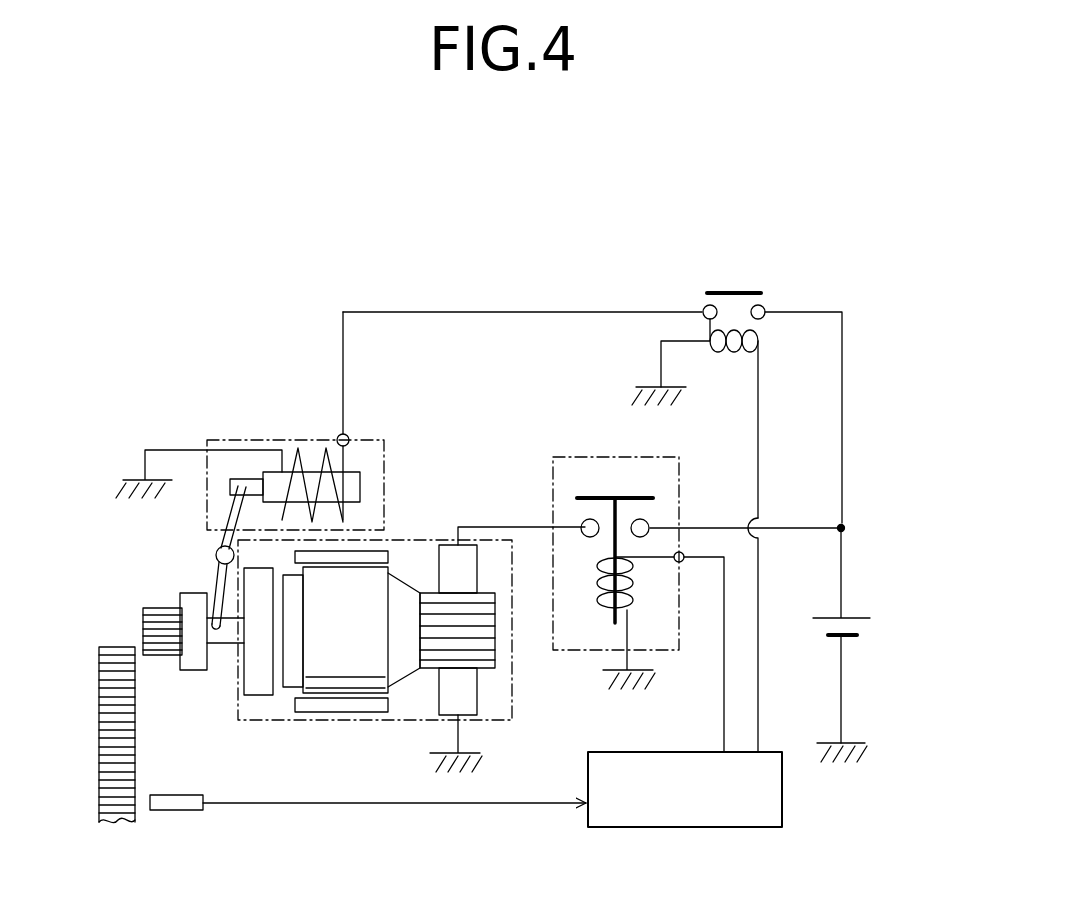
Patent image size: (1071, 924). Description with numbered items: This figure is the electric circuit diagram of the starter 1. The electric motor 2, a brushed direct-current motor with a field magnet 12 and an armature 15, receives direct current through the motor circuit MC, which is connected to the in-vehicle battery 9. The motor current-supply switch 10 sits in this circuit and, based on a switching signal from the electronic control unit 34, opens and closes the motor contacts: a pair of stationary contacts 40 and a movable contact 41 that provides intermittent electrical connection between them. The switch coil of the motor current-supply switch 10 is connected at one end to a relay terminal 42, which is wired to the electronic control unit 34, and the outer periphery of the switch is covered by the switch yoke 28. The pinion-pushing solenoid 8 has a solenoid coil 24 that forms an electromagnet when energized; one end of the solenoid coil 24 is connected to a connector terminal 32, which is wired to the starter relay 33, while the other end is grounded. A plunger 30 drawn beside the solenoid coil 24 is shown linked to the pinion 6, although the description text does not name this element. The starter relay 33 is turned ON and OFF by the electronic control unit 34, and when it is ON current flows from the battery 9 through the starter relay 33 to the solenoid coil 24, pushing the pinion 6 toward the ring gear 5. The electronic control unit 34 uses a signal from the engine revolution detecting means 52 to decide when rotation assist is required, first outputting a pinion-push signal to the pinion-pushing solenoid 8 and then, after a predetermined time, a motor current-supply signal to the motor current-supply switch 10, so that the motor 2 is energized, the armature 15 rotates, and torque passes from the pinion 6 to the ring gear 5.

The starter 1 is at (555, 268).
The electric motor 2 is at (258, 724).
The ring gear 5 is at (112, 728).
The pinion 6 is at (157, 618).
The pinion-pushing solenoid 8 is at (222, 438).
The in-vehicle battery 9 is at (860, 628).
The motor current-supply switch 10 is at (575, 455).
The field magnet 12 is at (317, 716).
The armature 15 is at (370, 683).
The solenoid coil 24 is at (308, 460).
The switch yoke 28 is at (602, 612).
The plunger and shift lever 30 is at (252, 478).
The connector terminal 32 is at (350, 436).
The starter relay 33 is at (738, 288).
The ECU 34 is at (688, 828).
The stationary contacts 40 is at (632, 521).
The movable contact 41 is at (640, 496).
The relay terminal 42 is at (683, 562).
The engine revolution detecting means 52 is at (178, 812).
The motor circuit MC is at (768, 520).